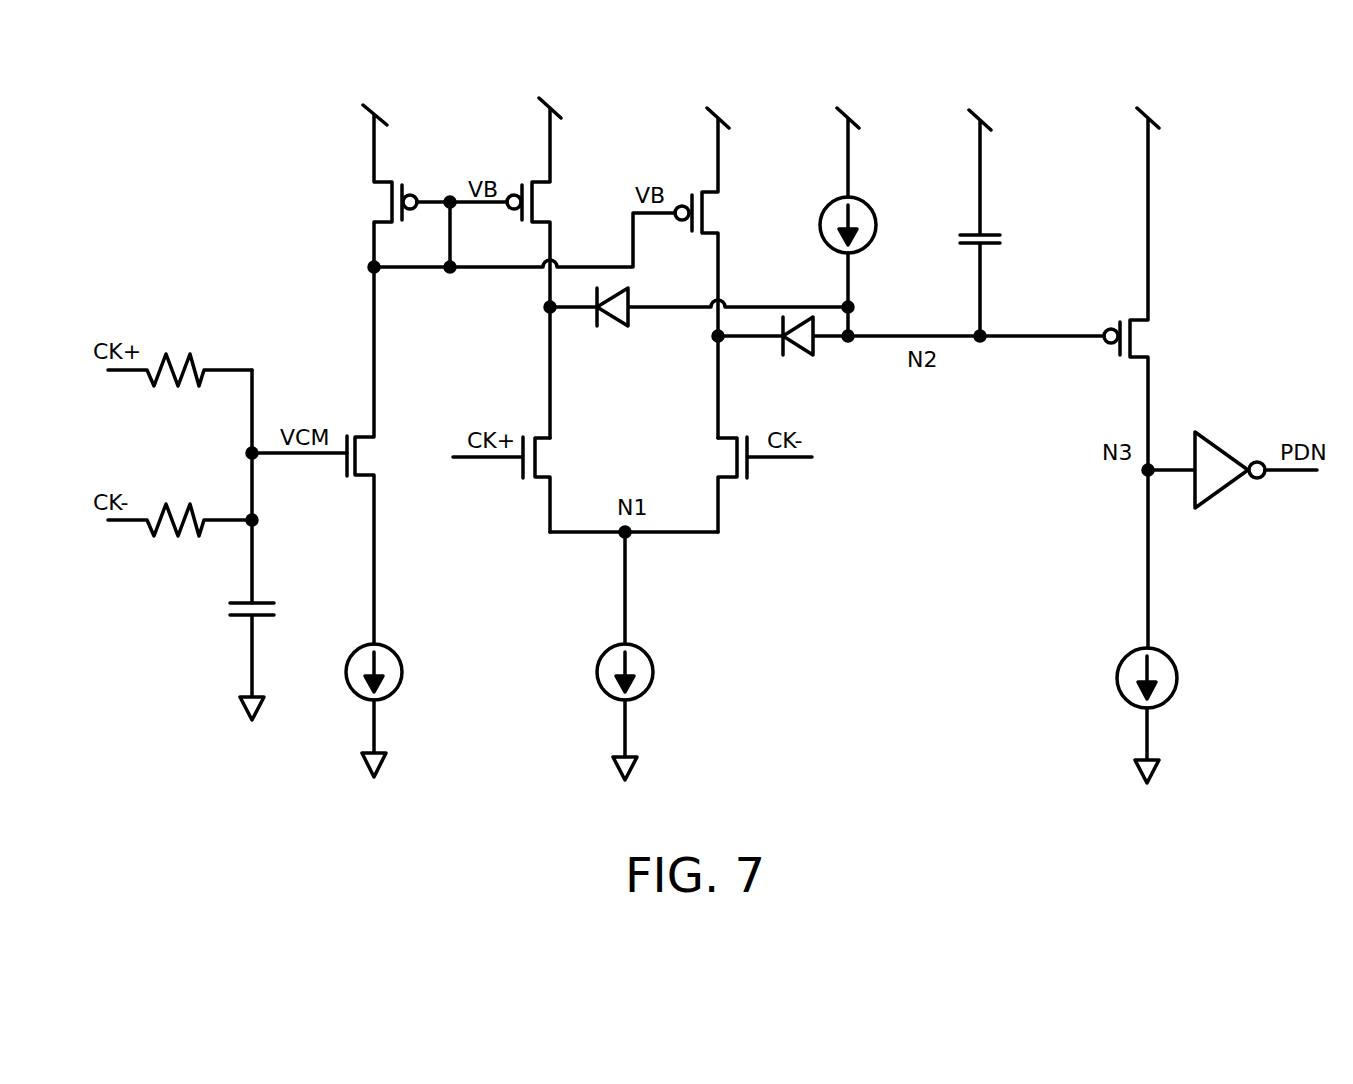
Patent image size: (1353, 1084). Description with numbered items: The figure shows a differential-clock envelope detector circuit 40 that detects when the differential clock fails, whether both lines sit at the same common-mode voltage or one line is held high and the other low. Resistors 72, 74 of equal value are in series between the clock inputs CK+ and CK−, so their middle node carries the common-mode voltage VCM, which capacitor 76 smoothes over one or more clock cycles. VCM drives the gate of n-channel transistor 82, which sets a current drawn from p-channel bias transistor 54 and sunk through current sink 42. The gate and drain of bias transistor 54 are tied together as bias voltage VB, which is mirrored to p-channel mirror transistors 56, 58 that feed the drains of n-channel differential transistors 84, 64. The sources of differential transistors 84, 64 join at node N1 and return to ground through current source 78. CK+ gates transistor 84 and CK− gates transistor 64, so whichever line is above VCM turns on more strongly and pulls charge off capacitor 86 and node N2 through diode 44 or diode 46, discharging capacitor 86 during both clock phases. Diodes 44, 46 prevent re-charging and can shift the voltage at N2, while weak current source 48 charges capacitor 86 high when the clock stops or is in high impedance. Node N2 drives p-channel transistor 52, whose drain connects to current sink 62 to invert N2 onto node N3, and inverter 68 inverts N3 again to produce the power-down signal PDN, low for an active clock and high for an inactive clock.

The clock receiver circuit 40 is at (847, 840).
The current sink 42 is at (400, 684).
The diode 44 is at (625, 322).
The diode 46 is at (812, 352).
The current source 48 is at (876, 235).
The p-channel transistor 52 is at (1138, 337).
The p-channel bias transistor 54 is at (383, 194).
The p-channel mirror transistor 56 is at (545, 200).
The p-channel mirror transistor 58 is at (708, 213).
The current sink 62 is at (1177, 686).
The n-channel differential transistor 64 is at (728, 450).
The inverter 68 is at (1228, 486).
The resistor 72 is at (186, 347).
The resistor 74 is at (186, 496).
The capacitor 76 is at (262, 600).
The current source 78 is at (655, 684).
The n-channel transistor 82 is at (362, 454).
The n-channel differential transistor 84 is at (552, 458).
The capacitor 86 is at (986, 231).